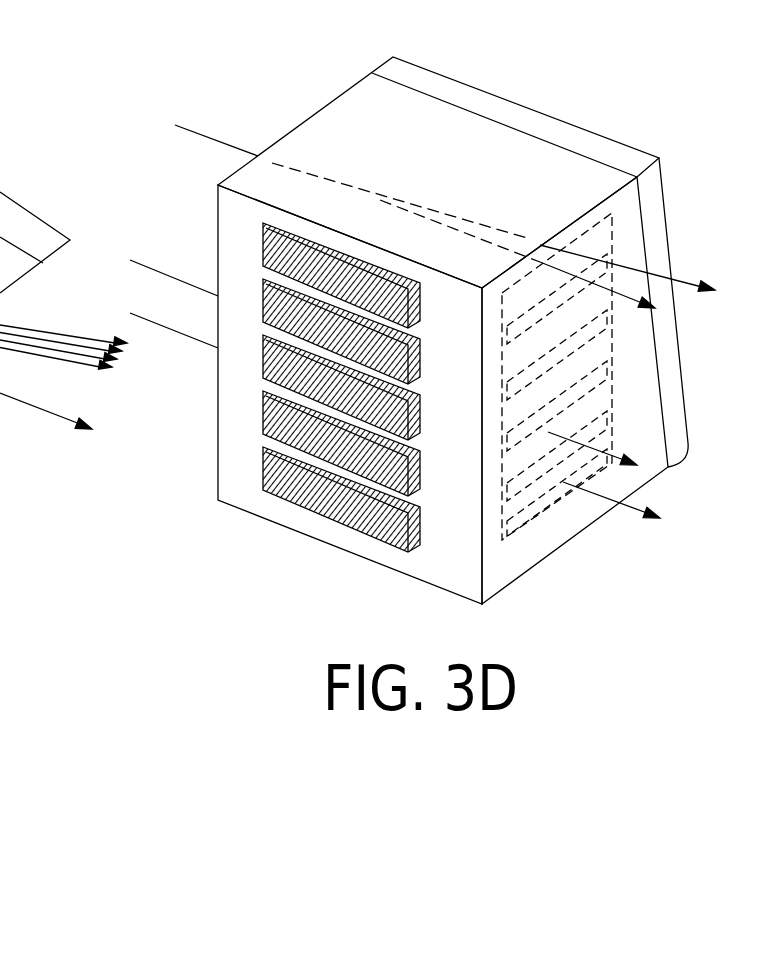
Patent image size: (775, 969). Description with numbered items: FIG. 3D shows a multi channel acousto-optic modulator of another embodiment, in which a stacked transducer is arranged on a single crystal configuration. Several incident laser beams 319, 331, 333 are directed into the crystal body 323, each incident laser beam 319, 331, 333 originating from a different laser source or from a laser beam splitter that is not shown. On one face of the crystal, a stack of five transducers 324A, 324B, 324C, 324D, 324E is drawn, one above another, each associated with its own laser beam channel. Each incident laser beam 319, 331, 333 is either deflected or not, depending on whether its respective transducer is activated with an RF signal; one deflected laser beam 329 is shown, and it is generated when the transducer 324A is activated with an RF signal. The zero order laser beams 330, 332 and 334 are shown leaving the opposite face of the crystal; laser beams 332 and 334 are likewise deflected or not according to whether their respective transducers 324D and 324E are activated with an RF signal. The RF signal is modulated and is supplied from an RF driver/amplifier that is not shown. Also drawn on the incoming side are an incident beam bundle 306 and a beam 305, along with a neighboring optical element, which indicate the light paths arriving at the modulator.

The reflected light beam 305 is at (6, 395).
The incident light beam bundle 306 is at (25, 334).
The incident laser beam 319 is at (205, 136).
The detector housing 323 is at (460, 553).
The transducer 324A is at (263, 257).
The transducer 324B is at (263, 315).
The transducer 324C is at (263, 372).
The transducer 324D is at (263, 429).
The transducer 324E is at (263, 484).
The deflected laser beam 329 is at (607, 262).
The zero order laser beam 330 is at (655, 310).
The incident laser beam 331 is at (150, 267).
The zero order laser beam 332 is at (640, 465).
The incident laser beam 333 is at (133, 314).
The zero order laser beam 334 is at (612, 484).